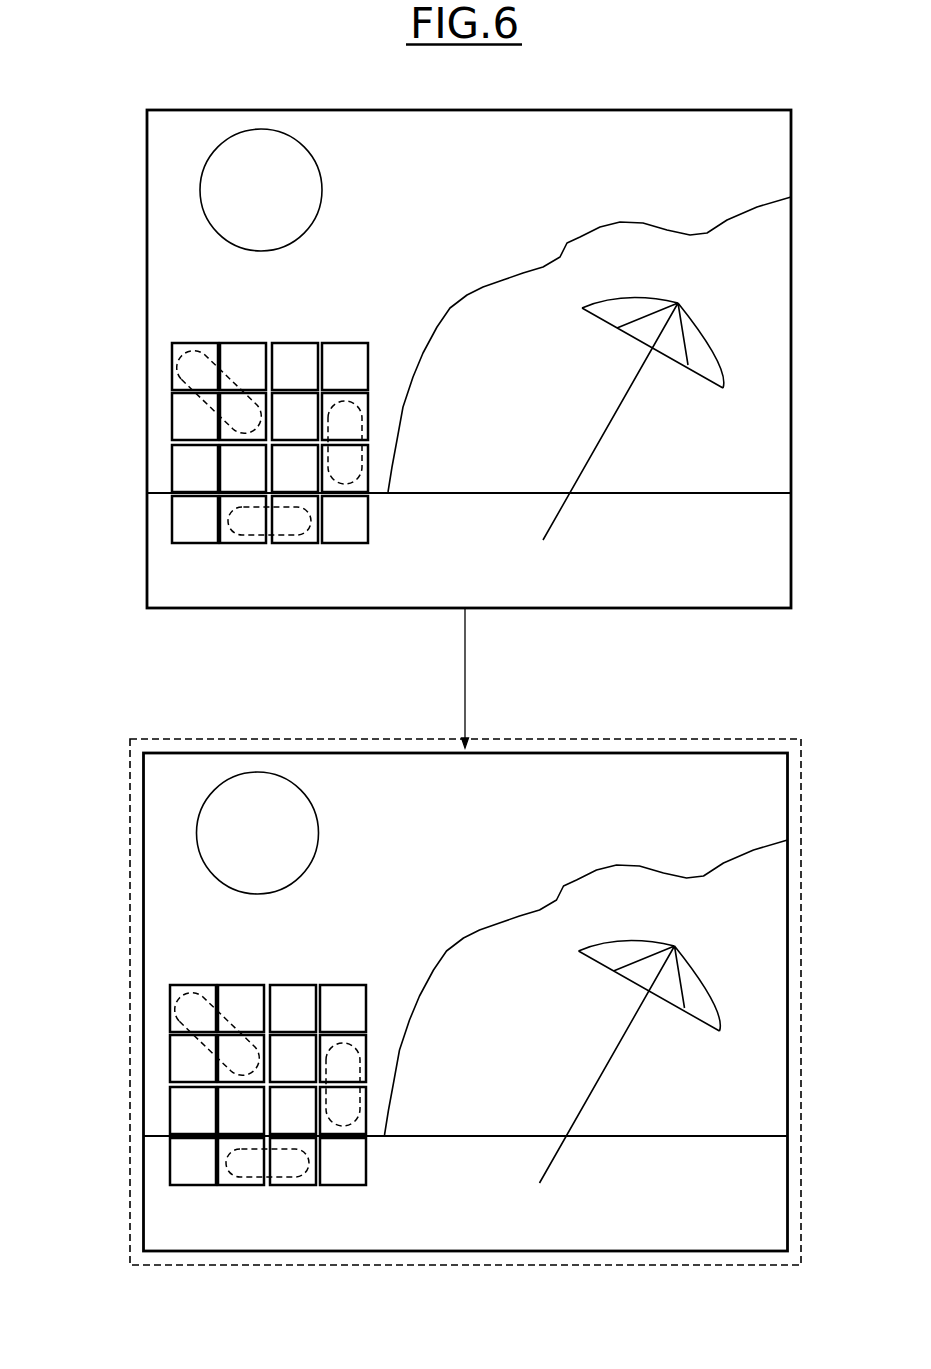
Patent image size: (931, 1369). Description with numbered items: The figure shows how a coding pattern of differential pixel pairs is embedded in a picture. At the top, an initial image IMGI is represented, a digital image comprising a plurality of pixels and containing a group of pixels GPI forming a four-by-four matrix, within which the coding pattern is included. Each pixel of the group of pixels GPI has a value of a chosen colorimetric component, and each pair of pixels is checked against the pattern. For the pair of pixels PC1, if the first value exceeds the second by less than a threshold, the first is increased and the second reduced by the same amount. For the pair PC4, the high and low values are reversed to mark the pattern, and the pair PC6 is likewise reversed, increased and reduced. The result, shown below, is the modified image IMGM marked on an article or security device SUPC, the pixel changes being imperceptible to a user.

The initial image IMGI is at (146, 109).
The group of pixels GPI is at (138, 447).
The pair of pixels PC1 is at (190, 352).
The pair of pixels PC4 is at (367, 443).
The pair of pixels PC6 is at (250, 538).
The modified image IMGM is at (129, 738).
The article or security device SUPC is at (250, 740).